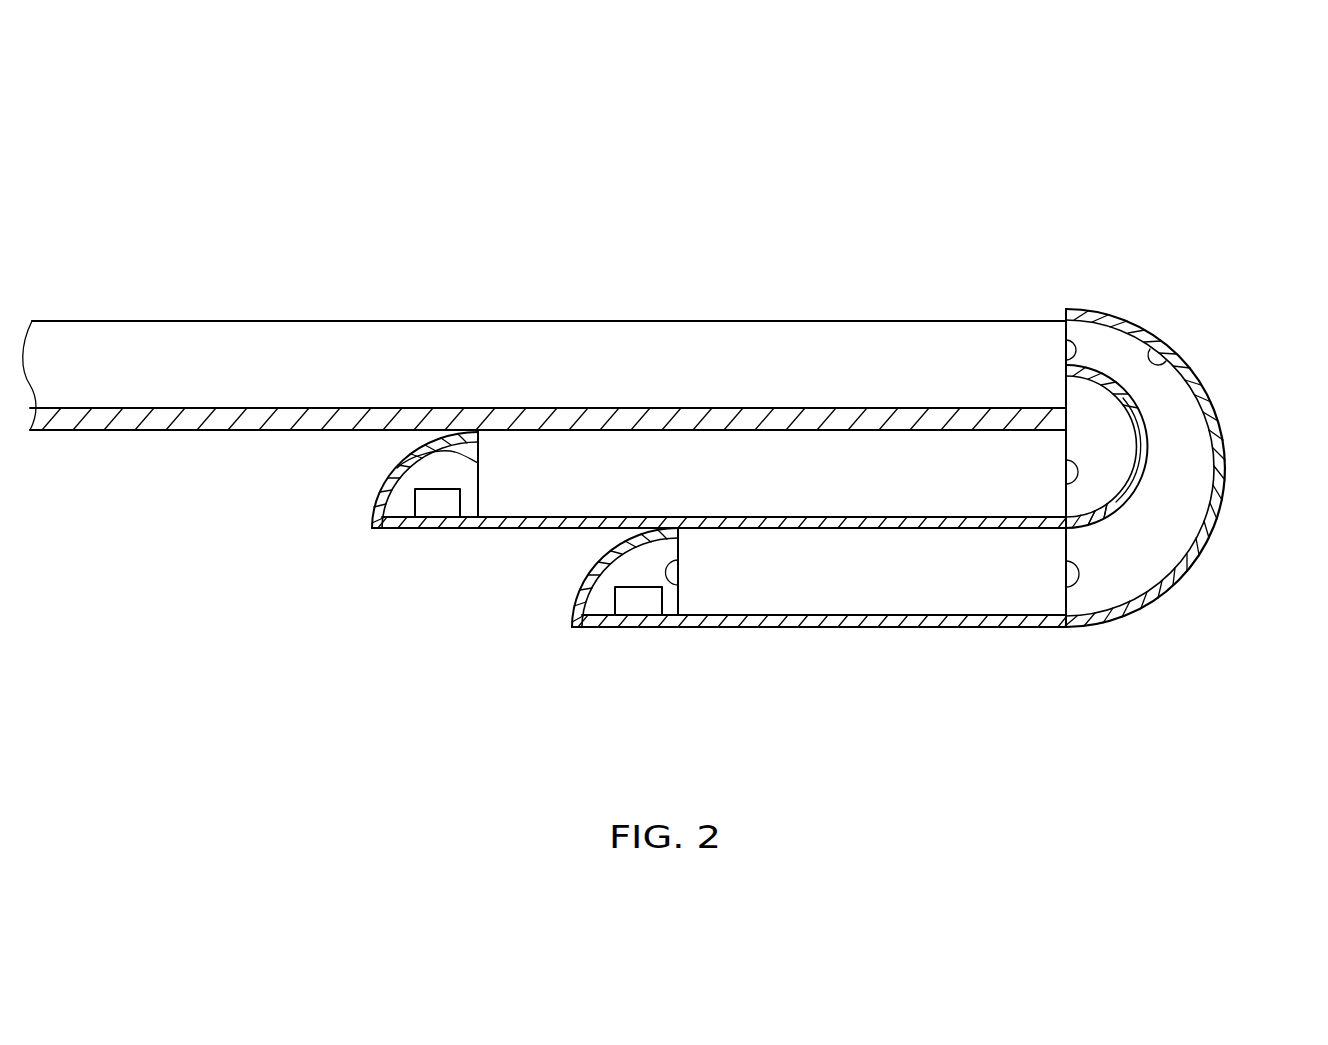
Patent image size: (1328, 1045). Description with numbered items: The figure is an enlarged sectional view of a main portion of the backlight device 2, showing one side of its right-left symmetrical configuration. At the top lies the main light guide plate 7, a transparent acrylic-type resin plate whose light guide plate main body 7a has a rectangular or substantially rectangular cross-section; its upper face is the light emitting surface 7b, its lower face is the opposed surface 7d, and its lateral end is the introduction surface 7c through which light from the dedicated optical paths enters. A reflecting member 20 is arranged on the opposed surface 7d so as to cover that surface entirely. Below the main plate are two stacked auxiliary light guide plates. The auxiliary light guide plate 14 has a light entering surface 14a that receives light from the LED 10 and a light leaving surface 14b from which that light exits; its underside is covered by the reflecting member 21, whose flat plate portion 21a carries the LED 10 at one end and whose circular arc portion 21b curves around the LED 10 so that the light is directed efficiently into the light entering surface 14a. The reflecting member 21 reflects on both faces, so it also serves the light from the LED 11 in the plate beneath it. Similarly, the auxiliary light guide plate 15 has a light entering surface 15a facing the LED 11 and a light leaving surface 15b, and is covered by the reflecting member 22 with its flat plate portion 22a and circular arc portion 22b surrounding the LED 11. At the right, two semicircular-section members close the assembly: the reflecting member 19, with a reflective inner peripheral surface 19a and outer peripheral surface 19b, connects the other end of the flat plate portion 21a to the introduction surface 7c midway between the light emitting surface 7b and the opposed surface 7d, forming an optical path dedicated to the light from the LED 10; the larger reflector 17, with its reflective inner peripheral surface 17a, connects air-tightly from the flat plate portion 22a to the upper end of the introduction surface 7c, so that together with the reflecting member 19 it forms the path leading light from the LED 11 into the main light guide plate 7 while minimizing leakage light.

The backlight device 2 is at (1018, 195).
The main light guide plate 7 is at (549, 425).
The light guide plate main body 7a is at (465, 345).
The light emitting surface 7b is at (590, 320).
The introduction surface 7c is at (1066, 360).
The opposed surface 7d is at (712, 403).
The LED 10 is at (437, 503).
The LED 11 is at (638, 600).
The auxiliary light guide plate 14 is at (778, 472).
The light entering surface 14a is at (404, 460).
The light leaving surface 14b is at (1062, 484).
The auxiliary light guide plate 15 is at (967, 472).
The light entering surface 15a is at (678, 585).
The light leaving surface 15b is at (1066, 587).
The reflector 17 is at (1194, 463).
The inner peripheral surface 17a is at (1165, 346).
The reflecting member 19 is at (1182, 501).
The inner peripheral surface 19a is at (1110, 495).
The outer peripheral surface 19b is at (1117, 497).
The reflecting member 20 is at (213, 425).
The reflecting member 21 is at (677, 528).
The flat plate portion 21a is at (545, 530).
The circular arc portion 21b is at (386, 487).
The reflecting member 22 is at (780, 626).
The flat plate portion 22a is at (842, 622).
The circular arc portion 22b is at (578, 598).